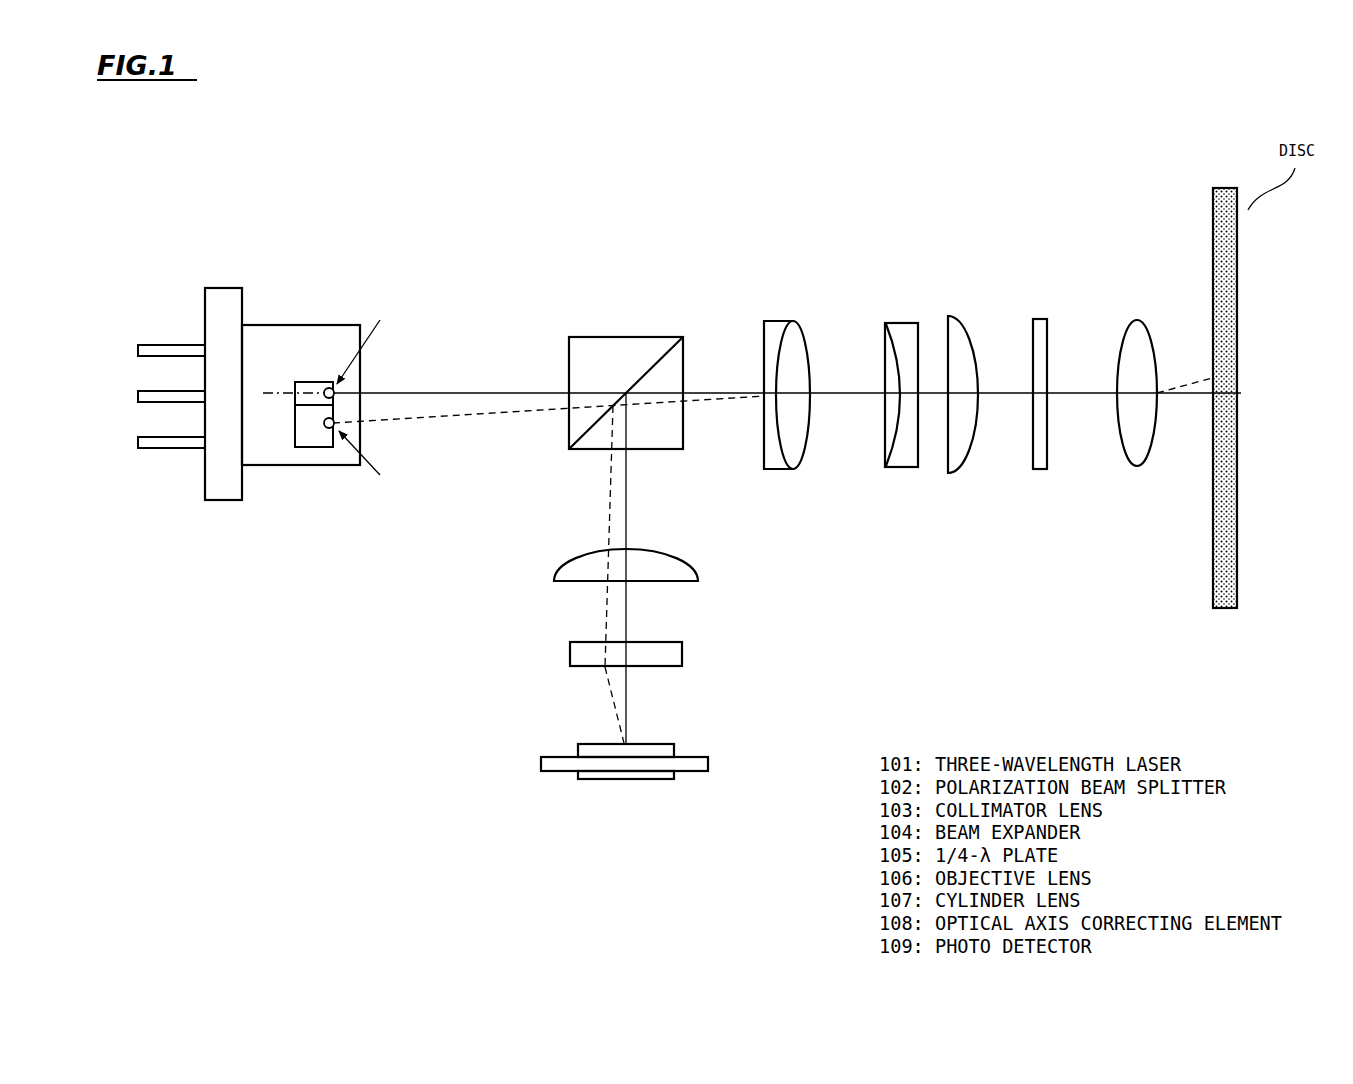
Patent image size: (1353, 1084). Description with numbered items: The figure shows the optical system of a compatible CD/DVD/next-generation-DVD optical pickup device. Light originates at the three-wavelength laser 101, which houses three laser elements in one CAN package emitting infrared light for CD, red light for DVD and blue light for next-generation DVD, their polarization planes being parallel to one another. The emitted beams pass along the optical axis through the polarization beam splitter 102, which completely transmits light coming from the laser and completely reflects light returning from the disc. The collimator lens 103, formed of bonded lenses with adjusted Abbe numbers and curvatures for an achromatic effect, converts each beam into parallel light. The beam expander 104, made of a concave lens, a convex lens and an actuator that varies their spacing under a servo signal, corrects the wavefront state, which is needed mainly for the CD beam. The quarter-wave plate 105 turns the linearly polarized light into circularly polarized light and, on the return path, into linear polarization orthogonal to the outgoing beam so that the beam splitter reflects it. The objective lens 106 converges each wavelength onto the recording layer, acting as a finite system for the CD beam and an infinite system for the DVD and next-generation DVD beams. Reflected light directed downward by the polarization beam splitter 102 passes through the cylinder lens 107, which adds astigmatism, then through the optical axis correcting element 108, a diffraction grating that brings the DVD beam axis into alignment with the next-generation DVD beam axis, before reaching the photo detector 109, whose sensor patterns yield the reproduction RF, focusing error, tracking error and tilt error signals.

The three-wavelength laser 101 is at (235, 280).
The polarization beam splitter 102 is at (630, 323).
The collimator lens 103 is at (787, 313).
The beam expander 104 is at (963, 302).
The λ/4 plate 105 is at (1040, 305).
The objective lens 106 is at (1138, 305).
The cylinder lens 107 is at (686, 574).
The optical axis correcting element 108 is at (563, 669).
The photo detector 109 is at (697, 749).